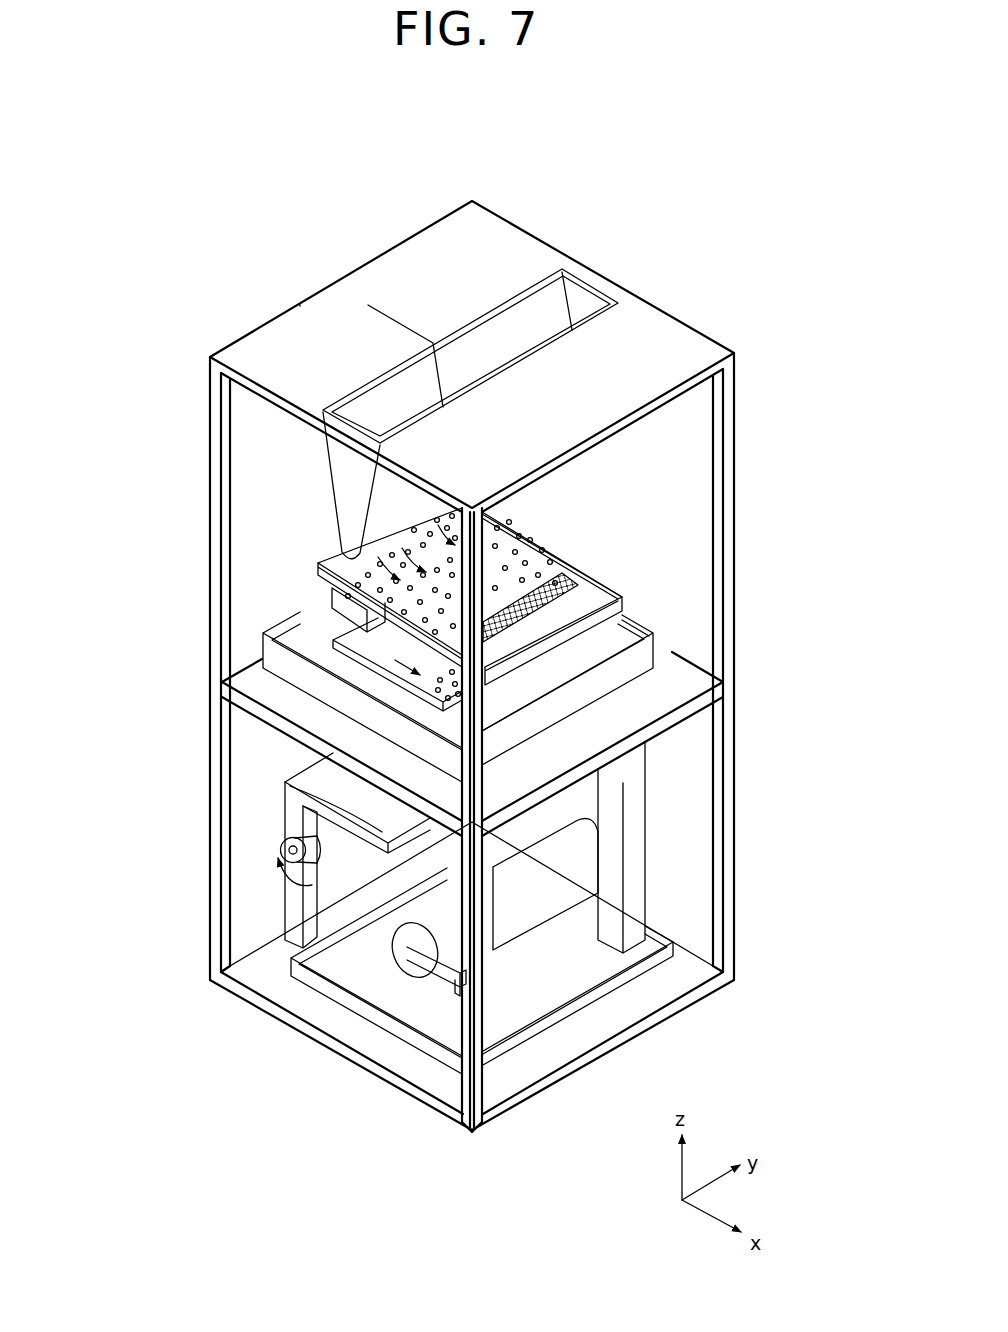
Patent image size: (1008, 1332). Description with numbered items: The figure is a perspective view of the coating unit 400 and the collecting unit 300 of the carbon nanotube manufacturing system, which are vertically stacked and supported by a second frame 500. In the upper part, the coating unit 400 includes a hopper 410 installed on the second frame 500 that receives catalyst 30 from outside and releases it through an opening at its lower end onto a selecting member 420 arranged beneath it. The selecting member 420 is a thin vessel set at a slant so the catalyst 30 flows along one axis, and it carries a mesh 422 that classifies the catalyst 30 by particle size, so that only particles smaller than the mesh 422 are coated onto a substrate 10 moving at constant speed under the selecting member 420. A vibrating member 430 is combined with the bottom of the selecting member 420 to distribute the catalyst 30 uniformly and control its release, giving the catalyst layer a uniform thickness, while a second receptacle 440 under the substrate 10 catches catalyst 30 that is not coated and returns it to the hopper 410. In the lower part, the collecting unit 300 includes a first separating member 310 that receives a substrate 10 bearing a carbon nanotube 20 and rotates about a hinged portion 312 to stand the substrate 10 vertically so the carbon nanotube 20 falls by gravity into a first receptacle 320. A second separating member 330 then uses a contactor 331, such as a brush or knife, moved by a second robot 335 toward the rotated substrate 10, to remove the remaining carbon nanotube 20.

The substrate 10 is at (343, 637).
The carbon nanotube 20 is at (317, 766).
The catalyst 30 is at (520, 537).
The collecting unit 300 is at (178, 1045).
The first separating member 310 is at (292, 907).
The hinged portion 312 is at (283, 842).
The first receptacle 320 is at (402, 1030).
The second separating member 330 is at (658, 786).
The contactor 331 is at (403, 943).
The second robot 335 is at (636, 840).
The coating unit 400 is at (676, 474).
The hopper 410 is at (340, 473).
The selecting member 420 is at (626, 598).
The mesh 422 is at (570, 580).
The vibrating member 430 is at (340, 592).
The second receptacle 440 is at (650, 665).
The second frame 500 is at (215, 548).